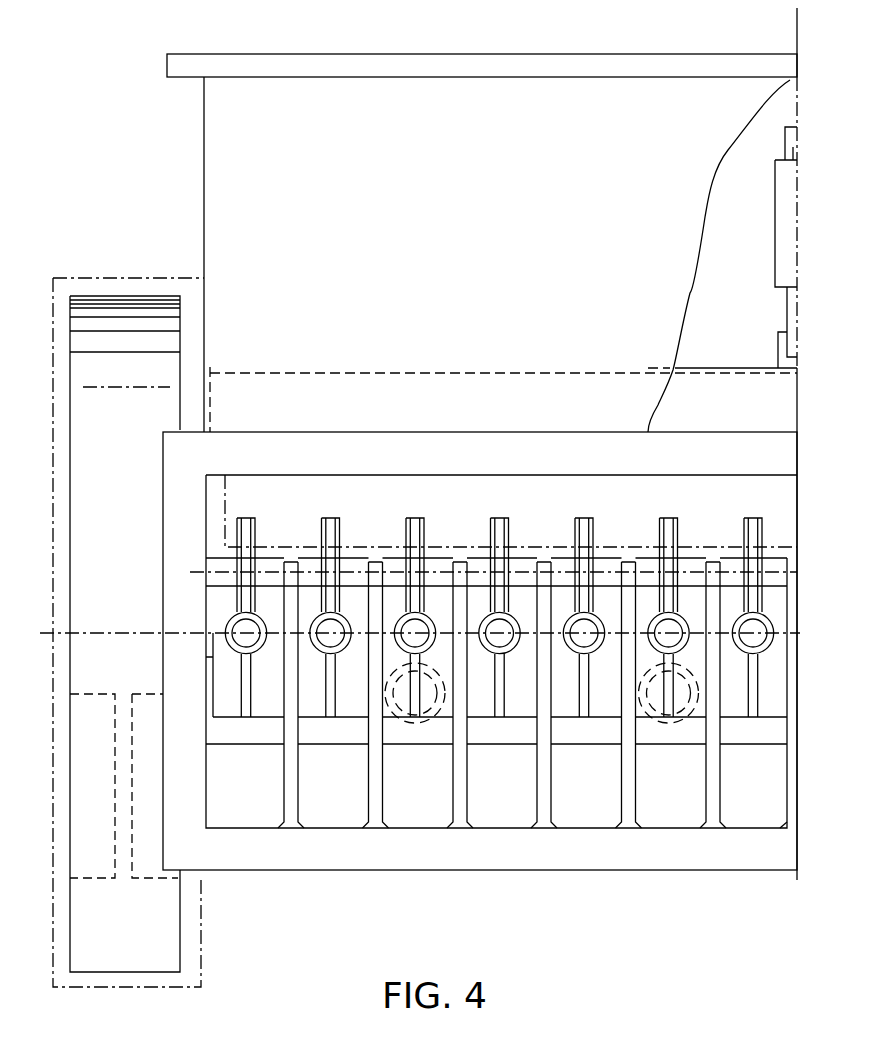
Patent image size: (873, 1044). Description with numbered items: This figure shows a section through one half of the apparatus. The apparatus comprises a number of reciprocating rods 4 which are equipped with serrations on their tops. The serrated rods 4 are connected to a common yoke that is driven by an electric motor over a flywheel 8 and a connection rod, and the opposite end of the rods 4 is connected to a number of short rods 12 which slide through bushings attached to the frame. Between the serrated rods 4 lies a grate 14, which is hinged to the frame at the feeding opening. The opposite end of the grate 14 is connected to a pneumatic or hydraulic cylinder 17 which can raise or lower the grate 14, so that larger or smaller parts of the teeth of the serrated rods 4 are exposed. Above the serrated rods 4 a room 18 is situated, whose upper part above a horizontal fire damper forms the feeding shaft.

The room 18 is at (580, 93).
The pneumatic or hydraulic cylinder 17 is at (785, 178).
The flywheel 8 is at (97, 310).
The reciprocating rod 4 is at (490, 533).
The grate 14 is at (563, 580).
The short rod 12 is at (658, 625).